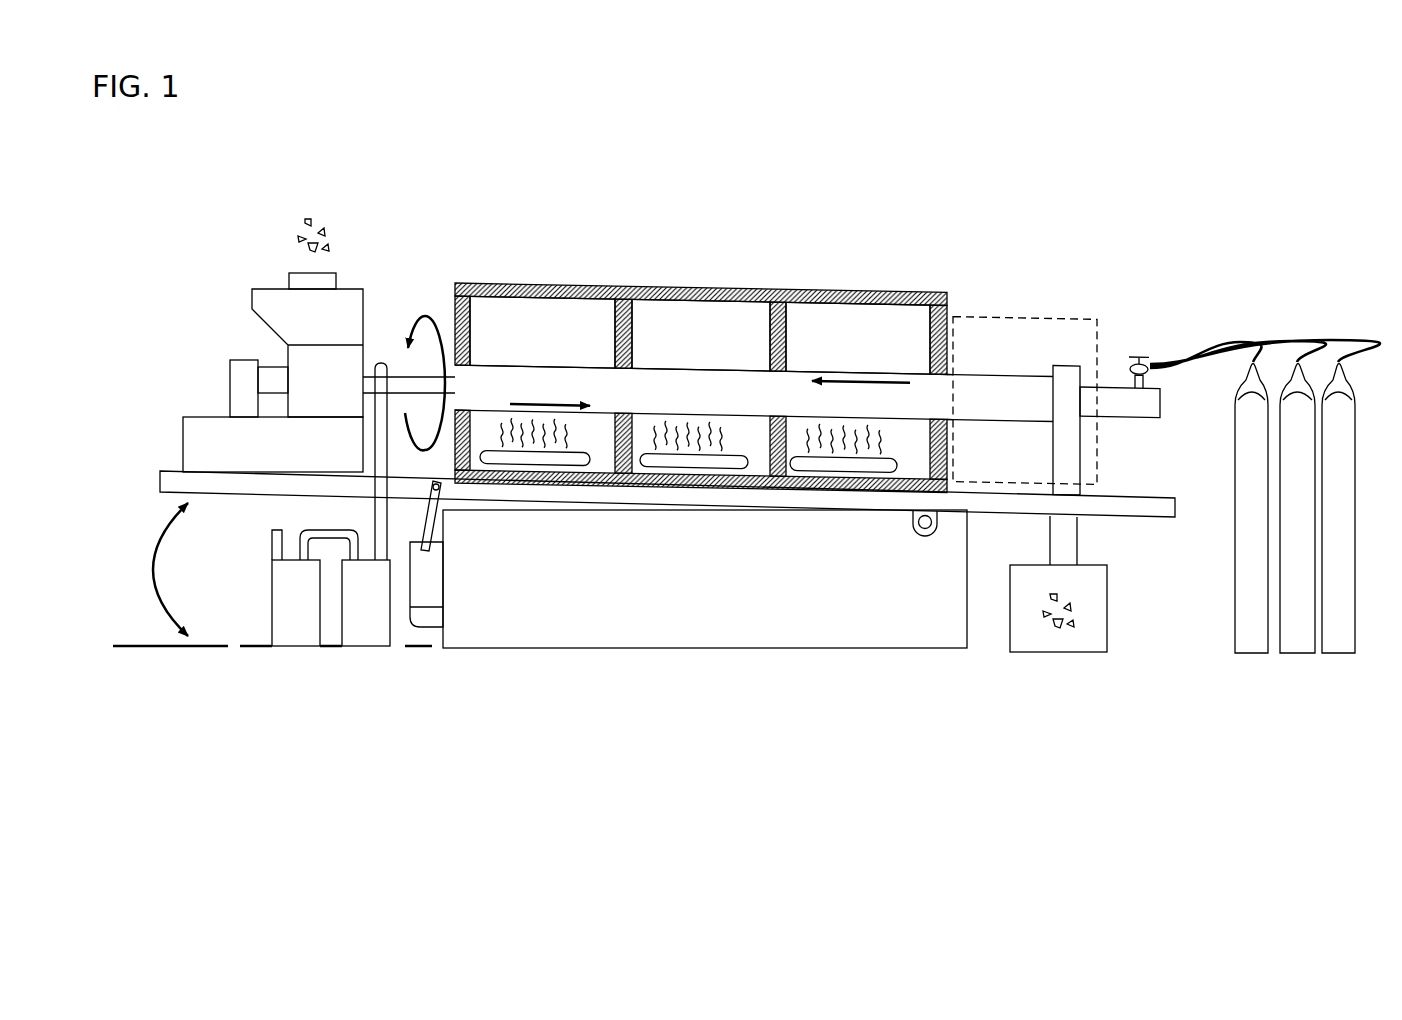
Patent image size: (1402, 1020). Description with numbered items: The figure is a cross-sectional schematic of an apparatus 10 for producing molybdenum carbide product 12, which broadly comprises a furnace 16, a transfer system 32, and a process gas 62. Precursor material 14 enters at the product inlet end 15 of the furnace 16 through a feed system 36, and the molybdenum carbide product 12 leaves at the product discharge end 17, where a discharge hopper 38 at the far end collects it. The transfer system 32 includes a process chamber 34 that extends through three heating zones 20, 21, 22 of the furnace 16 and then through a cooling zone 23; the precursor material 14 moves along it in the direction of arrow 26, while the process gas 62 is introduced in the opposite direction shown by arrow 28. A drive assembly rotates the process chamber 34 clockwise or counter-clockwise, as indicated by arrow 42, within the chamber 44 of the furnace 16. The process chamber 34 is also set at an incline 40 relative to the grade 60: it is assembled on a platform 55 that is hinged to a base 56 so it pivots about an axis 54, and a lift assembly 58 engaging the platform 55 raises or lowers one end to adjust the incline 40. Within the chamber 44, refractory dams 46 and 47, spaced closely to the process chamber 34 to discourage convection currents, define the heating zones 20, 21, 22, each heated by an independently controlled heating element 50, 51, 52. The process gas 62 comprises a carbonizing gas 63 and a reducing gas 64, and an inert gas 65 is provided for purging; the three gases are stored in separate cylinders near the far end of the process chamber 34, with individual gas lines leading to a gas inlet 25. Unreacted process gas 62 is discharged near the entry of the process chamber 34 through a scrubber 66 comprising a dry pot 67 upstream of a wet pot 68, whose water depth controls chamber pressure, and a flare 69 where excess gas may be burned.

The apparatus 10 is at (746, 435).
The molybdenum carbide product 12 is at (1086, 629).
The precursor material 14 is at (319, 214).
The product inlet end 15 is at (294, 249).
The furnace 16 is at (656, 280).
The product discharge end 17 is at (1033, 689).
The first heating zone 20 is at (610, 329).
The second heating zone 21 is at (768, 329).
The third heating zone 22 is at (925, 334).
The cooling zone 23 is at (1038, 356).
The gas inlet 25 is at (1150, 358).
The arrow 26 is at (520, 402).
The arrow 28 is at (840, 385).
The transfer system 32 is at (411, 295).
The process chamber 34 is at (725, 407).
The feed system 36 is at (257, 272).
The discharge hopper 38 is at (1108, 586).
The incline 40 is at (152, 566).
The arrow 42 is at (426, 316).
The chamber 44 is at (710, 315).
The refractory dam 46 is at (640, 343).
The refractory dam 47 is at (787, 355).
The heating element 50 is at (573, 452).
The heating element 51 is at (727, 455).
The heating element 52 is at (878, 458).
The axis 54 is at (910, 530).
The platform 55 is at (1176, 502).
The base 56 is at (657, 594).
The lift assembly 58 is at (440, 594).
The grade 60 is at (190, 649).
The process gas 62 is at (1285, 547).
The carbonizing gas 63 is at (1243, 655).
The reducing gas 64 is at (1308, 655).
The inert gas 65 is at (1328, 655).
The scrubber 66 is at (301, 575).
The dry pot 67 is at (379, 618).
The wet pot 68 is at (309, 618).
The flare 69 is at (275, 530).